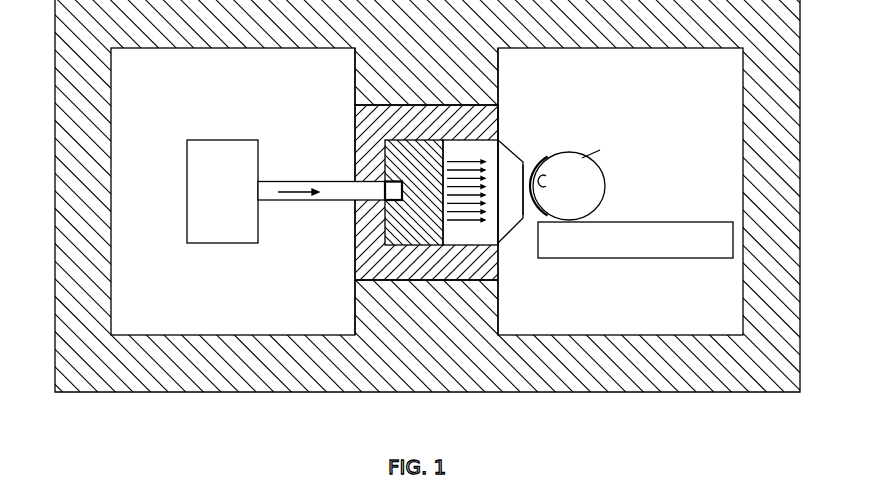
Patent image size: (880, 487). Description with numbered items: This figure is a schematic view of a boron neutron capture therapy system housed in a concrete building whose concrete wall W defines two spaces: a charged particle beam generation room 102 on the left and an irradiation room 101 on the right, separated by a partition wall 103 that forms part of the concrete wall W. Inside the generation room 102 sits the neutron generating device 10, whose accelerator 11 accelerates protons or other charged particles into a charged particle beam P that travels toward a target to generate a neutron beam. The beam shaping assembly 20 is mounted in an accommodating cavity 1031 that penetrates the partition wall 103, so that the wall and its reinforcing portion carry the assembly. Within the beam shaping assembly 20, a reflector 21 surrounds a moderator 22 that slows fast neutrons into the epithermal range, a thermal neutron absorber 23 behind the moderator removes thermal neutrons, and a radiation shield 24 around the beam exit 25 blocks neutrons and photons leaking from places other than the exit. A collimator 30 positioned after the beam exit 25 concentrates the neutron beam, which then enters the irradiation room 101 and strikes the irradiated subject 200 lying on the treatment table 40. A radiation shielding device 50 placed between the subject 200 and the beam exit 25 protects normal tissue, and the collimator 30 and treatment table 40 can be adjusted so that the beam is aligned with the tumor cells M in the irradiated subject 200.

The concrete wall W is at (68, 228).
The irradiation room 101 is at (711, 106).
The charged particle beam generation room 102 is at (179, 102).
The partition wall 103 is at (358, 63).
The accommodating cavity 1031 is at (355, 100).
The neutron generating device 10 is at (264, 234).
The accelerator 11 is at (200, 226).
The charged particle beam P is at (295, 193).
The beam shaping assembly 20 is at (350, 137).
The reflector 21 is at (357, 155).
The moderator 22 is at (372, 232).
The thermal neutron absorber 23 is at (452, 162).
The radiation shield 24 is at (500, 118).
The beam exit 25 is at (510, 163).
The collimator 30 is at (507, 218).
The treatment table 40 is at (624, 258).
The radiation shielding device 50 is at (546, 160).
The irradiated subject 200 is at (606, 189).
The tumor cells M is at (597, 152).